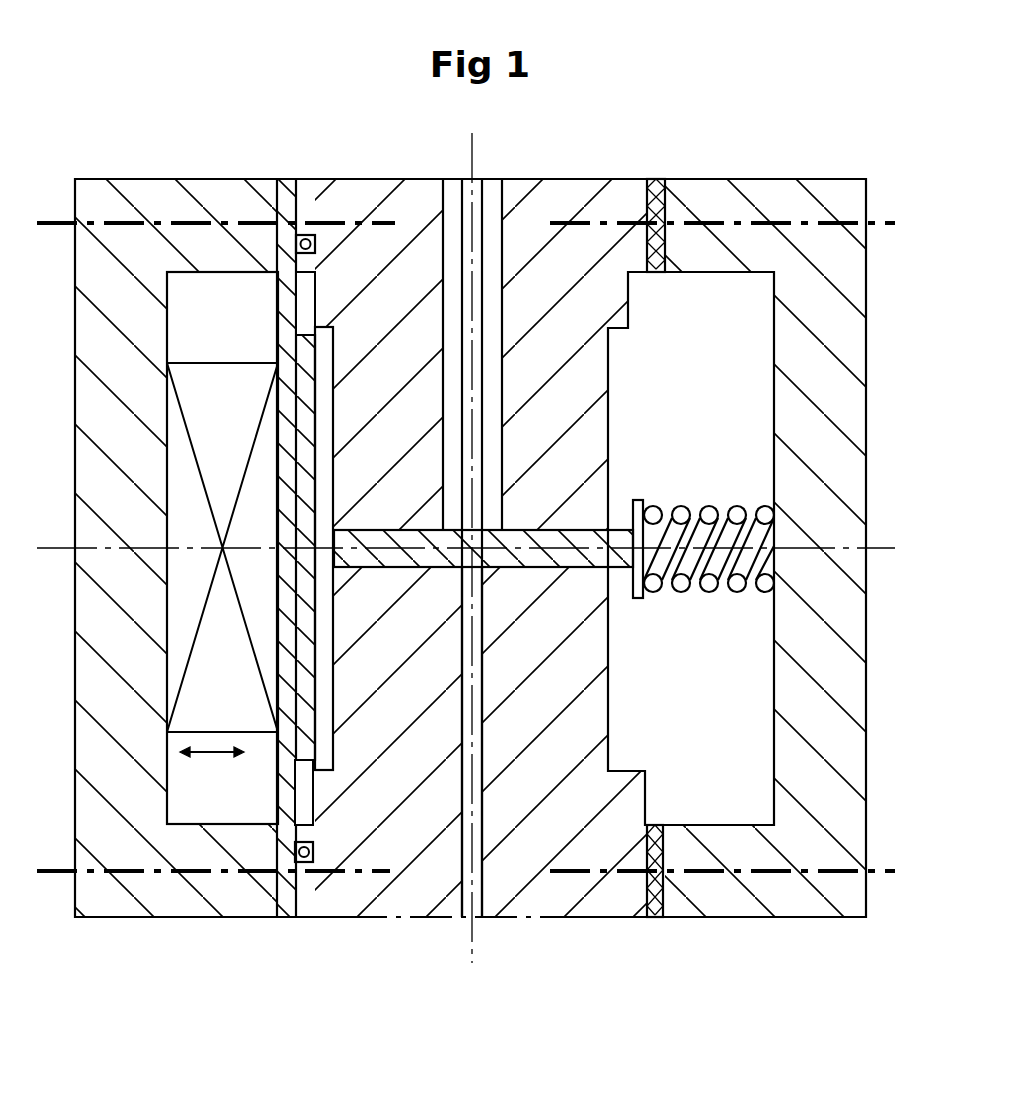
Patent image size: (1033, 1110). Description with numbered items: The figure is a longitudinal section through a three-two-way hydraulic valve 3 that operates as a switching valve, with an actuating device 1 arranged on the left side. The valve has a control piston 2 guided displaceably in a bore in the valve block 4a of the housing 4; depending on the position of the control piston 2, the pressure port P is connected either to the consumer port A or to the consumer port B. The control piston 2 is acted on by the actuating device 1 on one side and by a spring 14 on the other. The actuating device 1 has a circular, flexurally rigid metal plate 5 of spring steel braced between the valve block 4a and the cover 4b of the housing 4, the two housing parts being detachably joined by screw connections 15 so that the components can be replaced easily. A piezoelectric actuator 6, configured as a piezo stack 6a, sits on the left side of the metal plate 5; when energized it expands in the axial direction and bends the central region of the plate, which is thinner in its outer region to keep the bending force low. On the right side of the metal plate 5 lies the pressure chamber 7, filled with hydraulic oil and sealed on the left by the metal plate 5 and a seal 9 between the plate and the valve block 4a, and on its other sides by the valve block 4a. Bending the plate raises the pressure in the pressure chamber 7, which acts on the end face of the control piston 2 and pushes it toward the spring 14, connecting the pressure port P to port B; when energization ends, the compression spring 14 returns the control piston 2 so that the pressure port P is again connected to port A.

The actuating device 1 is at (247, 133).
The control piston 2 is at (360, 558).
The hydraulic valve 3 is at (691, 412).
The housing 4 is at (470, 581).
The valve block 4a is at (365, 195).
The cover 4b is at (158, 900).
The metal plate 5 is at (282, 795).
The piezoelectric actuator 6 is at (222, 548).
The piezo stack 6a is at (222, 548).
The pressure chamber 7 is at (322, 425).
The seal 9 is at (282, 230).
The spring 14 is at (700, 480).
The screw connections 15 is at (52, 222).
The consumer port A is at (458, 177).
The consumer port B is at (487, 177).
The pressure port P is at (470, 917).